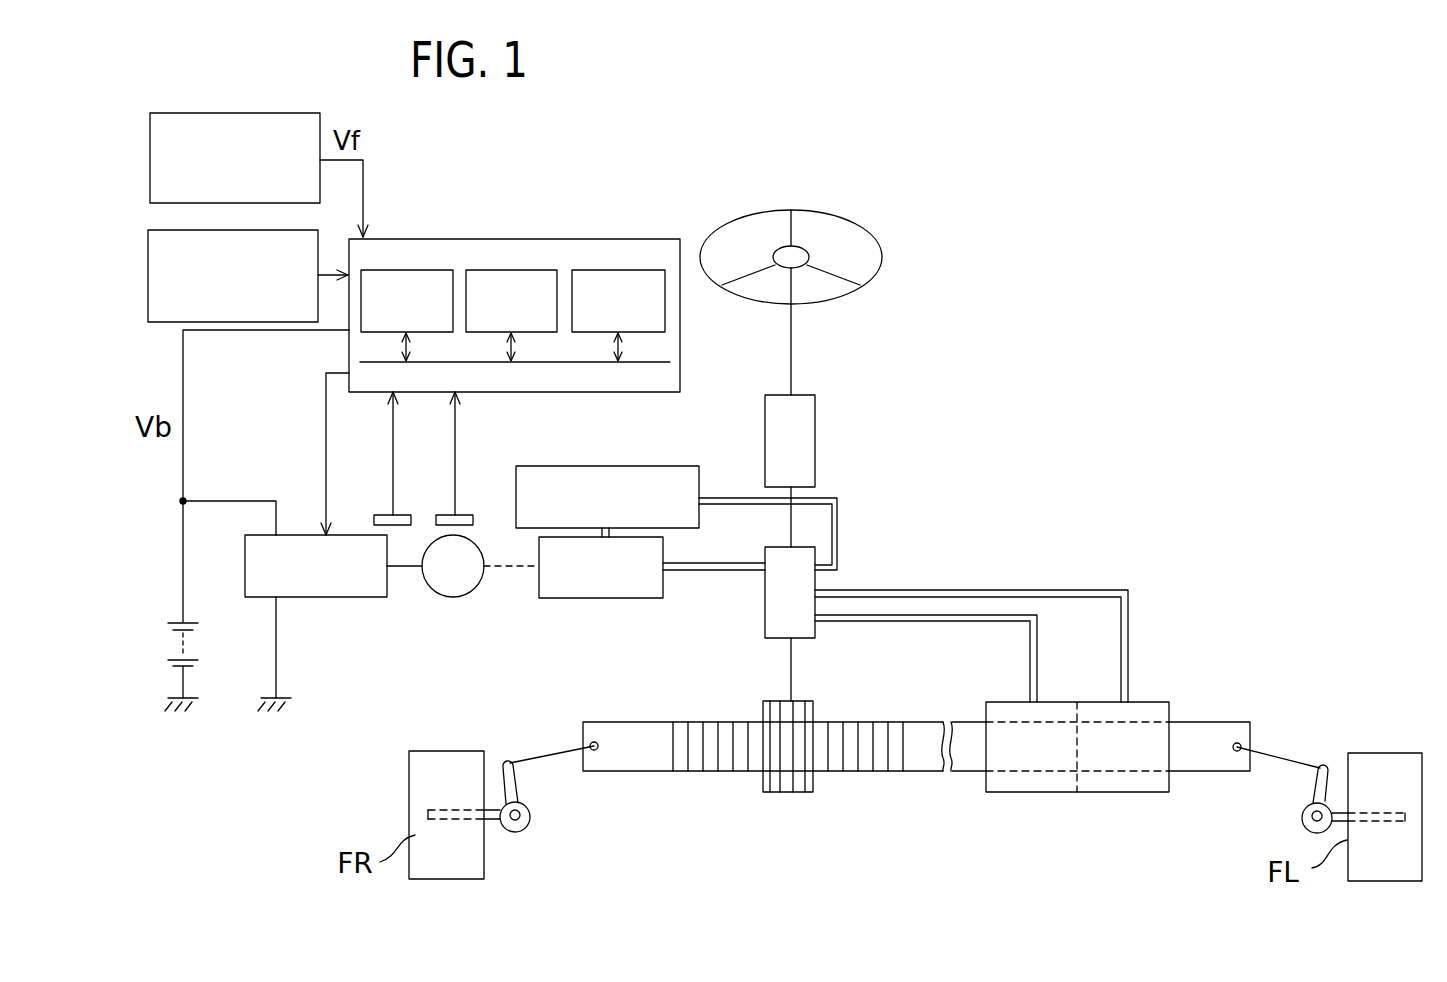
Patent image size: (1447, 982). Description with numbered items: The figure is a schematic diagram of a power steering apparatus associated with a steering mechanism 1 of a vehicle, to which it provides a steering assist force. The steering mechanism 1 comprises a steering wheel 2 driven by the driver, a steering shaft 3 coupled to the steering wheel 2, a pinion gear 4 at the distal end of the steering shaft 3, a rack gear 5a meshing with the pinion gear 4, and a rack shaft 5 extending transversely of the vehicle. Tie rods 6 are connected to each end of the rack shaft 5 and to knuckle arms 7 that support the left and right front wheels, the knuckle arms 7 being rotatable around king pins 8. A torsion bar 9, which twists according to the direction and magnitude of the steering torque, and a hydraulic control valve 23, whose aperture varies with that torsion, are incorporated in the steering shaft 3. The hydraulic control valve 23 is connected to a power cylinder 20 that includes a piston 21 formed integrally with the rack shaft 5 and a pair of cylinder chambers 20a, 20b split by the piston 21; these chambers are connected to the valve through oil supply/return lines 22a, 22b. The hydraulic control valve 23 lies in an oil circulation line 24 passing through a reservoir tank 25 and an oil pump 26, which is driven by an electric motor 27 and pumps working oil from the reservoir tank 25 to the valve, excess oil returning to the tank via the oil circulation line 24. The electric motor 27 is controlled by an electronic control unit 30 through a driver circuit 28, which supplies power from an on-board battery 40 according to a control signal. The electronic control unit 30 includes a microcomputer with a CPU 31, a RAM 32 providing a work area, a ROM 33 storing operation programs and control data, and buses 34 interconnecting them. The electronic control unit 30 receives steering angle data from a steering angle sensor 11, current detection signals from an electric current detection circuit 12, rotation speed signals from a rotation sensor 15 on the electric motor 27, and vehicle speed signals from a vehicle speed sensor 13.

The steering mechanism 1 is at (883, 390).
The steering wheel 2 is at (820, 212).
The steering shaft 3 is at (792, 363).
The pinion gear 4 is at (788, 787).
The rack shaft 5 is at (916, 789).
The rack gear 5a is at (727, 762).
The tie rod 6 is at (552, 758).
The knuckle arm 7 is at (530, 817).
The king pin 8 is at (522, 828).
The torsion bar 9 is at (808, 424).
The steering angle sensor 11 is at (158, 323).
The electric current detection circuit 12 is at (445, 514).
The vehicle speed sensor 13 is at (150, 158).
The rotation sensor 15 is at (383, 514).
The power cylinder 20 is at (1155, 701).
The cylinder chamber 20a is at (1019, 785).
The cylinder chamber 20b is at (1137, 785).
The piston 21 is at (1080, 793).
The oil supply/return line 22a is at (916, 622).
The oil supply/return line 22b is at (1002, 589).
The hydraulic control valve 23 is at (762, 607).
The oil circulation line 24 is at (840, 527).
The reservoir tank 25 is at (668, 466).
The oil pump 26 is at (607, 598).
The electric motor 27 is at (455, 598).
The driver circuit 28 is at (317, 598).
The electronic control unit 30 is at (655, 239).
The CPU 31 is at (418, 270).
The RAM 32 is at (596, 270).
The ROM 33 is at (512, 270).
The bus 34 is at (570, 363).
The on-board battery 40 is at (178, 620).